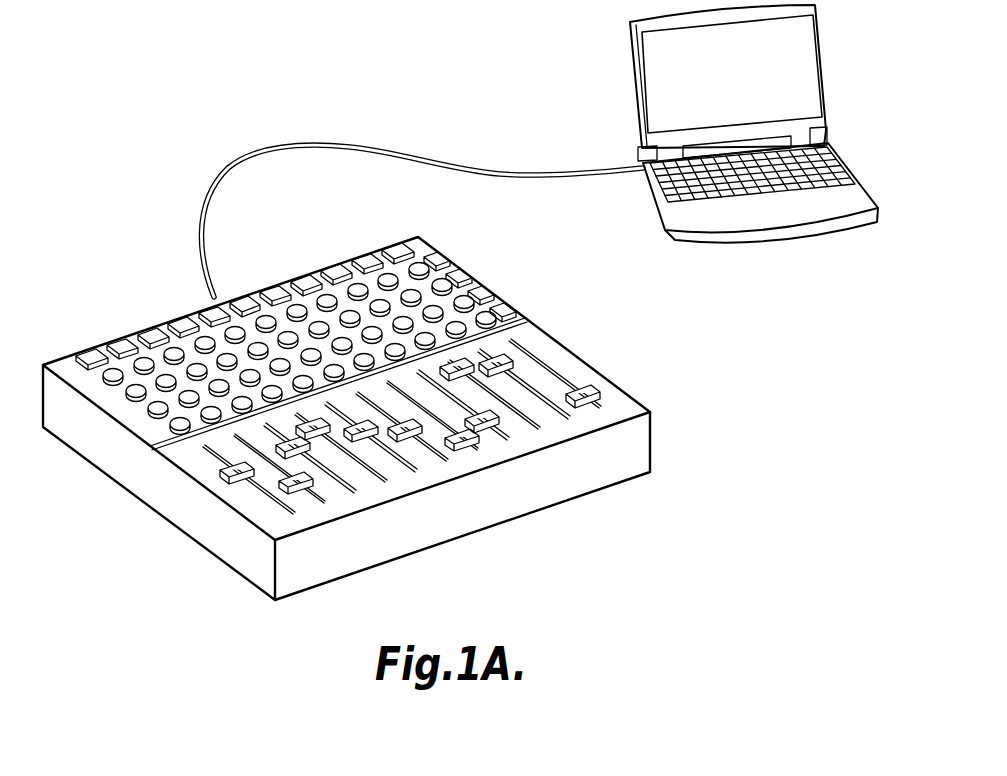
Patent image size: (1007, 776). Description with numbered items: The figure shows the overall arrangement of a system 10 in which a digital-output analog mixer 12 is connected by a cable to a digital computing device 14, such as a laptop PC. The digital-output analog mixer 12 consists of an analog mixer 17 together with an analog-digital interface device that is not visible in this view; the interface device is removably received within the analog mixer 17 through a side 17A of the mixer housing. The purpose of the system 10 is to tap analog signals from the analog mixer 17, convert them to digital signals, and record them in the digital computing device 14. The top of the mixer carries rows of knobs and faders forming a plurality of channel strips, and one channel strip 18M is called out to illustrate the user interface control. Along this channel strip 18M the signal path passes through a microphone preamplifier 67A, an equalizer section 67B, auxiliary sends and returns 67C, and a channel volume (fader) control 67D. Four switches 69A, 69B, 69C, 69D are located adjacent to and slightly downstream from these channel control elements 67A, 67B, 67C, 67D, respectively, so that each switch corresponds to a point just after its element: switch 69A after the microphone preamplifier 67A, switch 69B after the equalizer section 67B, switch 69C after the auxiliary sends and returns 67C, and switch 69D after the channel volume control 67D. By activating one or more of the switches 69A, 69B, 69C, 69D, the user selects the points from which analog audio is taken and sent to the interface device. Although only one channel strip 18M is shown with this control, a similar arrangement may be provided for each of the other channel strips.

The overall system 10 is at (192, 64).
The digital computing device 14 is at (635, 88).
The digital-output analog mixer 12 is at (173, 502).
The analog mixer 17 is at (336, 390).
The side of the analog mixer 17A is at (68, 364).
The channel strip 18M is at (397, 247).
The microphone preamplifier 67A is at (423, 262).
The equalizer section 67B is at (450, 284).
The auxiliary sends and returns 67C is at (472, 301).
The channel volume (fader) control 67D is at (494, 320).
The switch 69A is at (442, 255).
The switch 69B is at (461, 272).
The switch 69C is at (488, 294).
The switch 69D is at (512, 309).